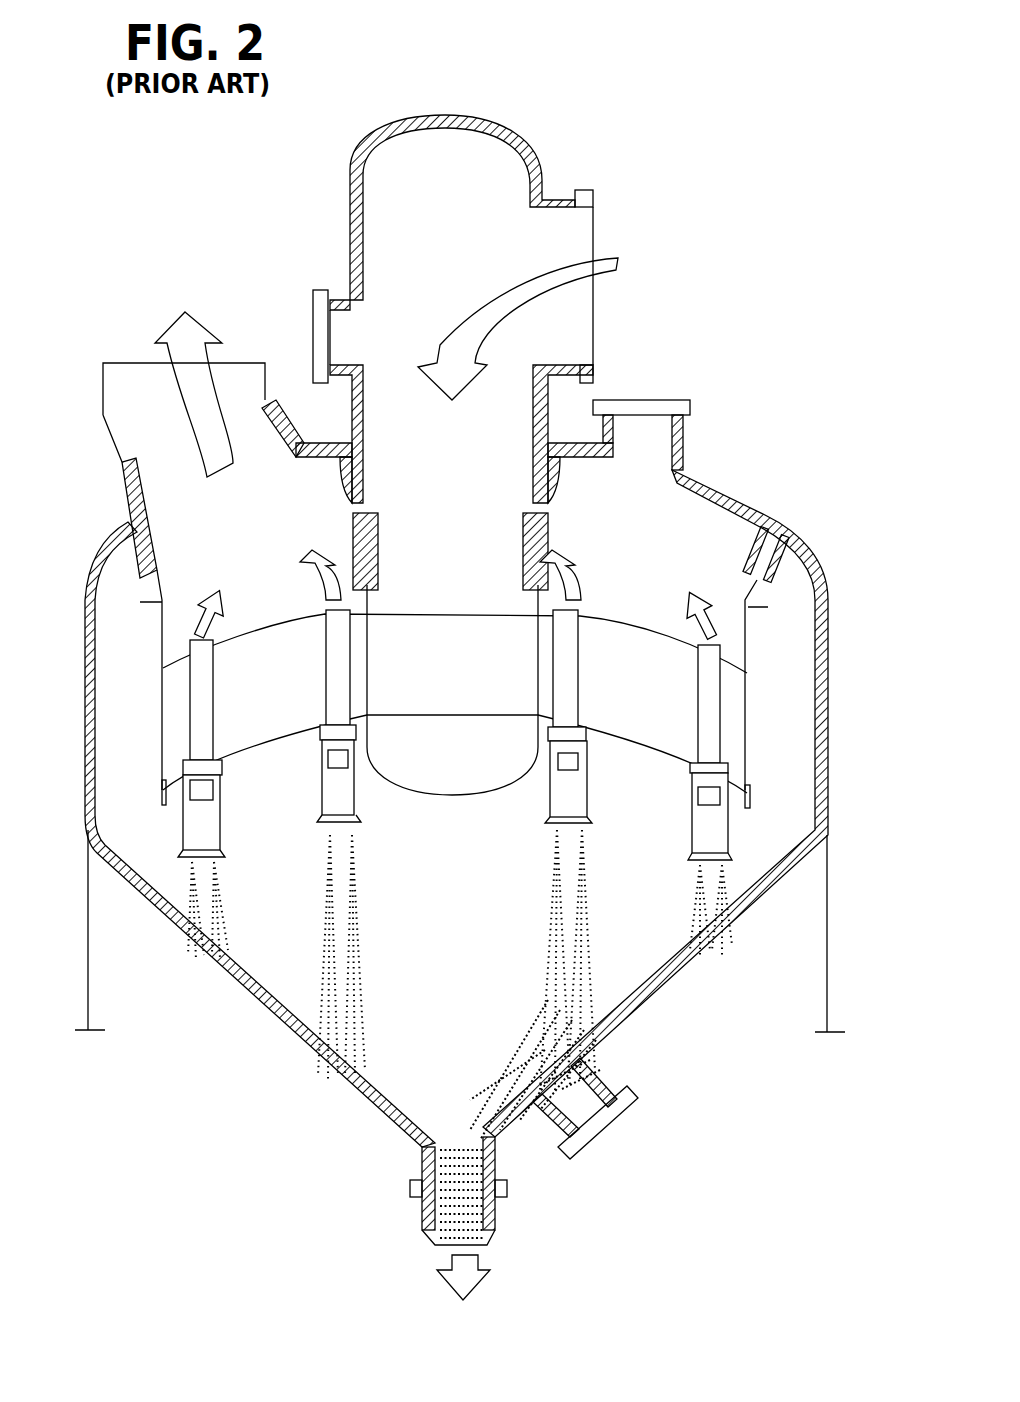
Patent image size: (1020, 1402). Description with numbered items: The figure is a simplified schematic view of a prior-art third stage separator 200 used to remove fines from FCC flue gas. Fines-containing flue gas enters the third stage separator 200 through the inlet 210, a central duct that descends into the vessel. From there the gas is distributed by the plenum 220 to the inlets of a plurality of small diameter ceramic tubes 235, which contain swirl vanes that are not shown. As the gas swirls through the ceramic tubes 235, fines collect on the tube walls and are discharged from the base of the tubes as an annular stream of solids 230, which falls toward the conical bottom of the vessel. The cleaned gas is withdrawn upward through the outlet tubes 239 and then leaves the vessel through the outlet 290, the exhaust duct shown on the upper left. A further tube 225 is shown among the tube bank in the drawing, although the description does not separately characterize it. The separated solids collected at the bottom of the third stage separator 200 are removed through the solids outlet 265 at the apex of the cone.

The third stage separator 200 is at (733, 490).
The inlet 210 is at (557, 200).
The plenum 220 is at (295, 697).
The atomizer feed tube 225 is at (690, 800).
The annular stream of solids 230 is at (263, 905).
The small diameter ceramic tubes 235 is at (260, 820).
The outlet tubes 239 is at (325, 608).
The solids outlet 265 is at (497, 1206).
The outlet 290 is at (103, 412).